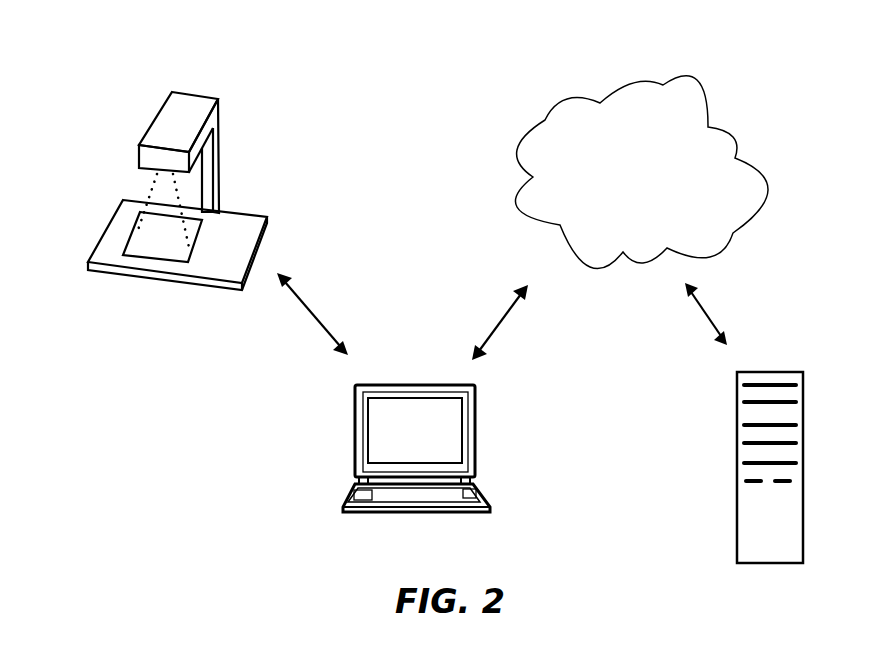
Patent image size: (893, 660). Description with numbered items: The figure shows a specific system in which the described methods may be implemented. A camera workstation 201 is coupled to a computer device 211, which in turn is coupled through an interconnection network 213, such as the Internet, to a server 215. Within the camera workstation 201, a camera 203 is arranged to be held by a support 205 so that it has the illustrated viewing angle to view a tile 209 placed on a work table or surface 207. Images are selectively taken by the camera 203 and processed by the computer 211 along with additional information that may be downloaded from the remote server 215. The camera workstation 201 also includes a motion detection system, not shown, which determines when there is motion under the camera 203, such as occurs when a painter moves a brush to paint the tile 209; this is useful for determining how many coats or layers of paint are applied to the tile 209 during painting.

The camera workstation 201 is at (140, 63).
The camera 203 is at (140, 160).
The support 205 is at (223, 172).
The work table or surface 207 is at (240, 290).
The tile 209 is at (160, 250).
The computer device 211 is at (475, 447).
The interconnection network 213 is at (643, 263).
The server 215 is at (733, 468).